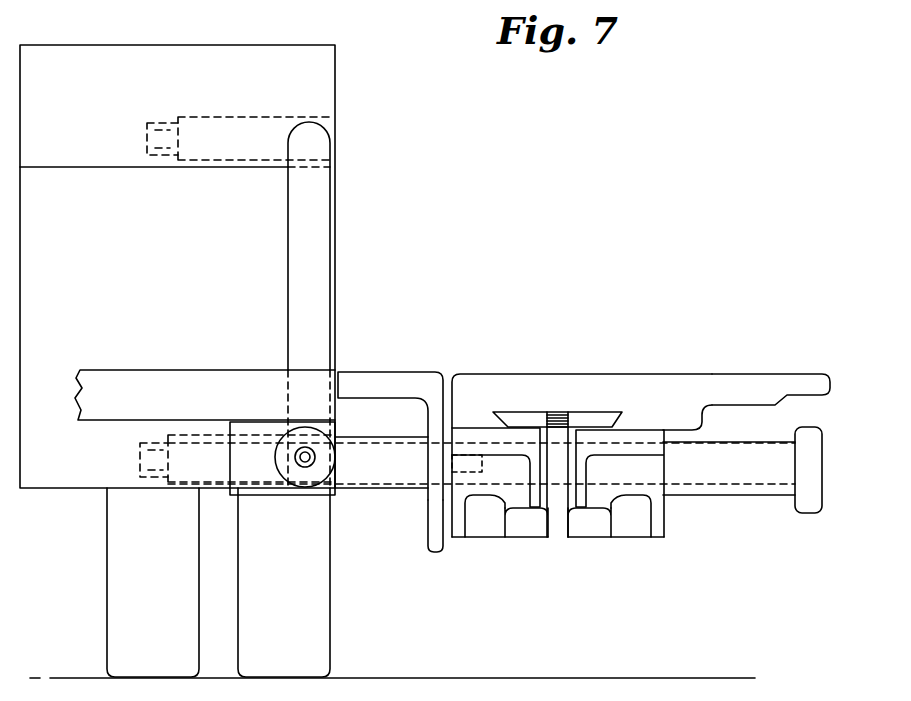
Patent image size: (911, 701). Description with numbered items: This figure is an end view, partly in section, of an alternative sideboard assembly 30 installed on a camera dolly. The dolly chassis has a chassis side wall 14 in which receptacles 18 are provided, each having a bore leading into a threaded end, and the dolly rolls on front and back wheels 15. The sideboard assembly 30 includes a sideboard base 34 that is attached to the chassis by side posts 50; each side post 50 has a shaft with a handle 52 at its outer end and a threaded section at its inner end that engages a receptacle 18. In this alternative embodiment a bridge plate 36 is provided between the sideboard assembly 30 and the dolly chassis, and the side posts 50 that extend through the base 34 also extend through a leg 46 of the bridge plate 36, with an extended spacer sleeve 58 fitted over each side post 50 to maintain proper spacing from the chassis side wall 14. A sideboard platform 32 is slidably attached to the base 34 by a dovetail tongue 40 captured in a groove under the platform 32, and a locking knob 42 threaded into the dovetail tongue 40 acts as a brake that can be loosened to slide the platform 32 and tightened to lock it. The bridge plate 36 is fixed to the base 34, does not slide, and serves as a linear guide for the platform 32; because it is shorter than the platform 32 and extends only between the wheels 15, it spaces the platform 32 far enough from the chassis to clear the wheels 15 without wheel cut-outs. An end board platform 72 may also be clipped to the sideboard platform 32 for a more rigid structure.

The chassis side wall 14 is at (335, 88).
The wheels 15 is at (157, 607).
The receptacles 18 is at (223, 117).
The sideboard assembly 30 is at (585, 372).
The sideboard platform 32 is at (745, 390).
The sideboard base 34 is at (657, 527).
The bridge plate 36 is at (358, 380).
The dovetail tongue 40 is at (605, 418).
The locking knob 42 is at (522, 518).
The leg 46 is at (433, 503).
The side posts 50 is at (402, 438).
The handle 52 is at (807, 508).
The spacer sleeve 58 is at (385, 490).
The end board platform 72 is at (132, 380).